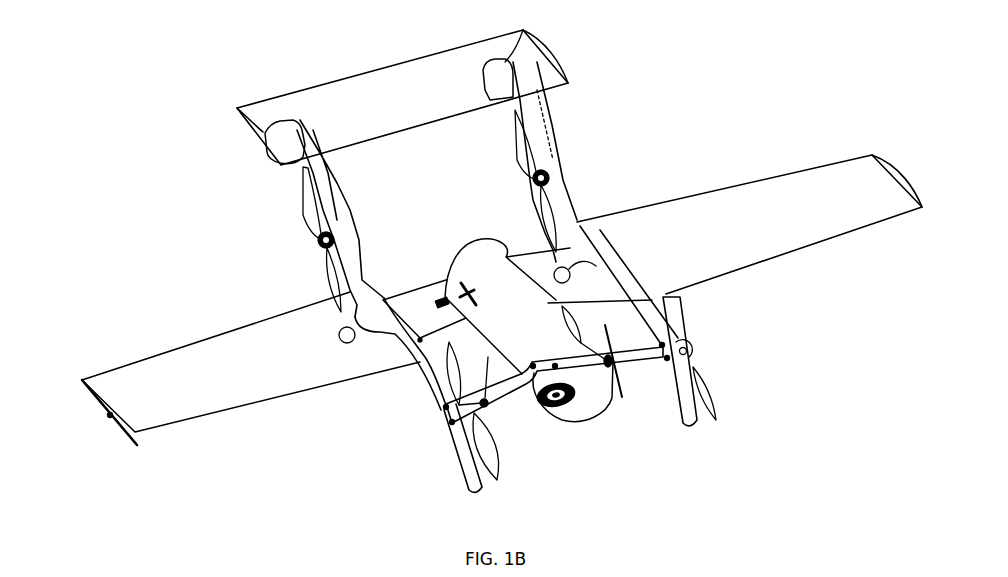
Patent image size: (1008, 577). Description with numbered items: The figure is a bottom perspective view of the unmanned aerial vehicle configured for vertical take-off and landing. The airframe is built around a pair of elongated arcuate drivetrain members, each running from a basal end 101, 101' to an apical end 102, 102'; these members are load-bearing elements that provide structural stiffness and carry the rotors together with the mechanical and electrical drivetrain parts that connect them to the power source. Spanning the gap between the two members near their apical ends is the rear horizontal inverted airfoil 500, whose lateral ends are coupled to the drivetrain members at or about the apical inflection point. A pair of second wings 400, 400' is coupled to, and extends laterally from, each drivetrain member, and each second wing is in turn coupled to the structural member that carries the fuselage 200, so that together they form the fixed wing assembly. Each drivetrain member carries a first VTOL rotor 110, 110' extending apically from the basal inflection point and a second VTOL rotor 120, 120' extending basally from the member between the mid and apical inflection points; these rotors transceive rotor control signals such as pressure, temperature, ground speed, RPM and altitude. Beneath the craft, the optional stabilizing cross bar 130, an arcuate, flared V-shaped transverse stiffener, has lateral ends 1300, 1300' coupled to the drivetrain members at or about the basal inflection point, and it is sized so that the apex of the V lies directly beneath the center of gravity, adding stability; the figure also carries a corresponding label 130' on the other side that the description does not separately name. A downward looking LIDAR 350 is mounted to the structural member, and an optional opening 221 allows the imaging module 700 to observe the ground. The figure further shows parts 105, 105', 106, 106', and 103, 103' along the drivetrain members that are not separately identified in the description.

The rear horizontal inverted airfoil 500 is at (390, 77).
The apical end 102 is at (544, 43).
The apical end 102' is at (220, 111).
The right rear motor mount 106 is at (467, 101).
The left rear motor mount 106' is at (257, 158).
The right boom upper section 105 is at (581, 158).
The left boom upper section 105' is at (360, 218).
The second VTOL rotor 120 is at (506, 181).
The second VTOL rotor 120' is at (293, 239).
The second wing 400 is at (749, 224).
The second wing 400' is at (251, 368).
The right boom joint 103 is at (606, 248).
The left boom joint 103' is at (276, 317).
The downward looking LIDAR 350 is at (441, 303).
The first VTOL rotor 110 is at (686, 323).
The first VTOL rotor 110' is at (401, 354).
The basal end 101 is at (726, 379).
The basal end 101' is at (422, 465).
The fuselage 200 is at (600, 412).
The lateral end of stabilizing cross bar 1300 is at (718, 329).
The lateral end of stabilizing cross bar 1300' is at (399, 433).
The imaging module 700 is at (543, 412).
The opening 221 is at (566, 406).
The stabilizing cross bar 130 is at (570, 349).
The left front propeller 130' is at (486, 400).